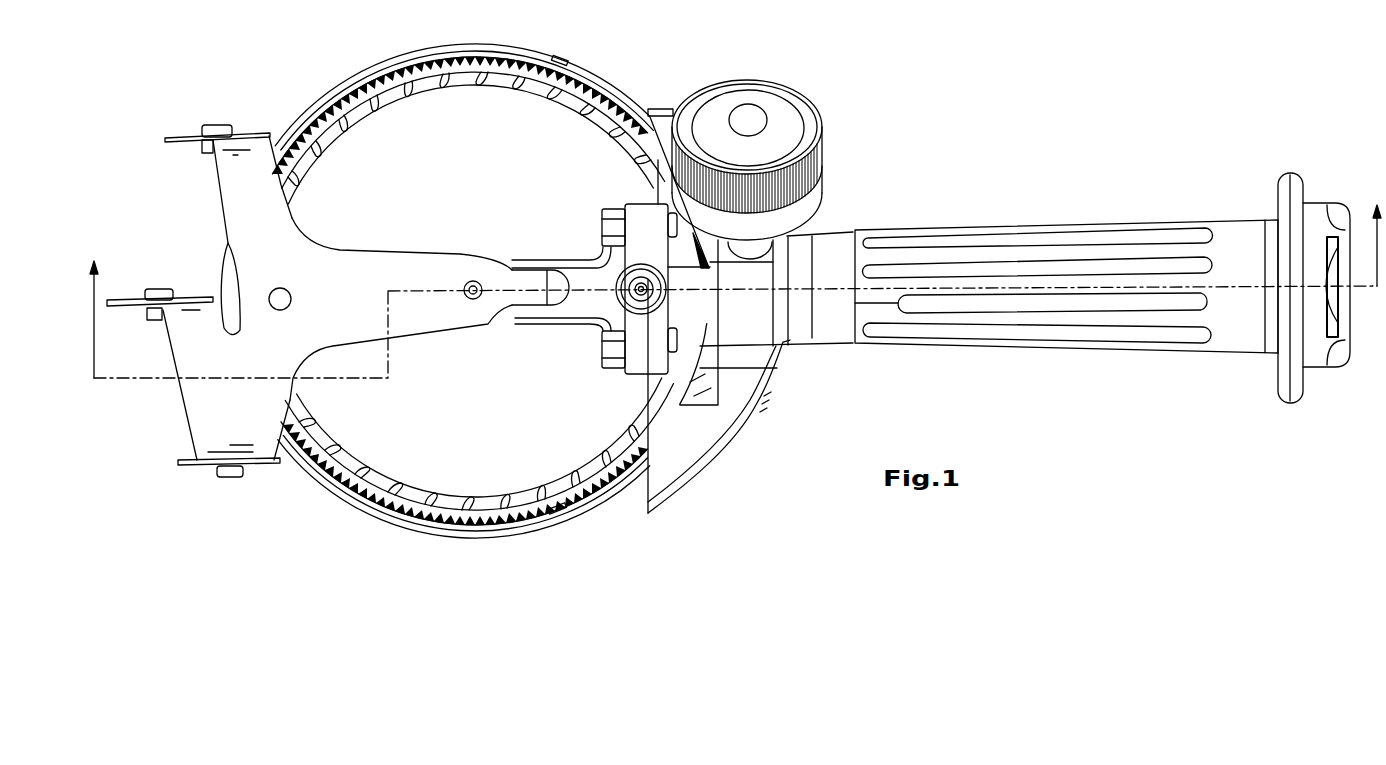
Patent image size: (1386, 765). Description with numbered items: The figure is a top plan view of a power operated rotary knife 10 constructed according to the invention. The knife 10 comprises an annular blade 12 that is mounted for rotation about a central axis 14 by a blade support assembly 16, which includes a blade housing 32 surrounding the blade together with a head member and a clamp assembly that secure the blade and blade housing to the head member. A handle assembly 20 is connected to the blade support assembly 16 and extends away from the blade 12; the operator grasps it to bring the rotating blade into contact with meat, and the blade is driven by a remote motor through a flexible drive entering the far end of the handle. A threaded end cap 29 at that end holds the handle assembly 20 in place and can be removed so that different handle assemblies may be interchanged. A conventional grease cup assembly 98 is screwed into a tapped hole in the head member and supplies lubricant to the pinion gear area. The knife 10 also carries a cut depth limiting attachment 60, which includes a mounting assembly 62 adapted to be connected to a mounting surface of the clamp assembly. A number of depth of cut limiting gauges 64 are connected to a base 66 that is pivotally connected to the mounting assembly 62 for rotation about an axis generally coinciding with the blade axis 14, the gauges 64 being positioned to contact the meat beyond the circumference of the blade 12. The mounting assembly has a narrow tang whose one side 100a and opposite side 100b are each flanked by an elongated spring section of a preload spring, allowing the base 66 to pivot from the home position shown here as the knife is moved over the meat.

The power operated rotary knife 10 is at (856, 74).
The annular blade 12 is at (371, 99).
The central axis 14 is at (468, 281).
The blade support assembly 16 is at (608, 178).
The handle assembly 20 is at (1070, 320).
The end cap 29 is at (1343, 360).
The blade housing 32 is at (470, 538).
The cut depth limiting attachment 60 is at (172, 398).
The mounting assembly 62 is at (586, 303).
The depth of cut limiting gauges 64 is at (175, 130).
The base 66 is at (341, 318).
The grease cup assembly 98 is at (777, 130).
The one side of the tang 100a is at (520, 323).
The opposite side of the tang 100b is at (523, 268).